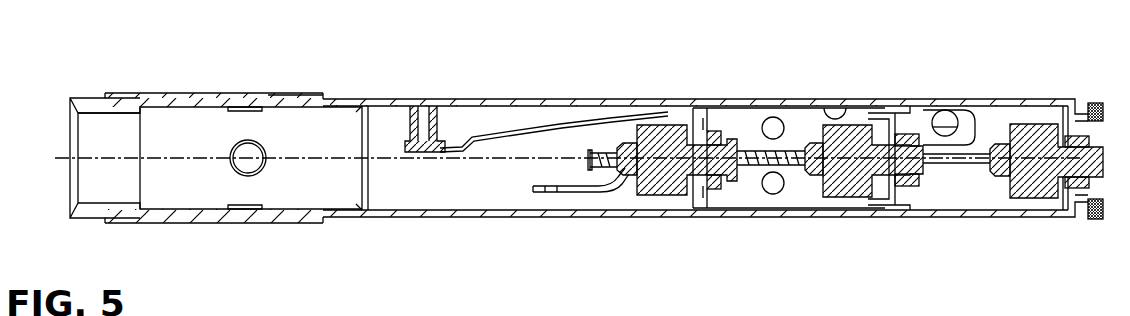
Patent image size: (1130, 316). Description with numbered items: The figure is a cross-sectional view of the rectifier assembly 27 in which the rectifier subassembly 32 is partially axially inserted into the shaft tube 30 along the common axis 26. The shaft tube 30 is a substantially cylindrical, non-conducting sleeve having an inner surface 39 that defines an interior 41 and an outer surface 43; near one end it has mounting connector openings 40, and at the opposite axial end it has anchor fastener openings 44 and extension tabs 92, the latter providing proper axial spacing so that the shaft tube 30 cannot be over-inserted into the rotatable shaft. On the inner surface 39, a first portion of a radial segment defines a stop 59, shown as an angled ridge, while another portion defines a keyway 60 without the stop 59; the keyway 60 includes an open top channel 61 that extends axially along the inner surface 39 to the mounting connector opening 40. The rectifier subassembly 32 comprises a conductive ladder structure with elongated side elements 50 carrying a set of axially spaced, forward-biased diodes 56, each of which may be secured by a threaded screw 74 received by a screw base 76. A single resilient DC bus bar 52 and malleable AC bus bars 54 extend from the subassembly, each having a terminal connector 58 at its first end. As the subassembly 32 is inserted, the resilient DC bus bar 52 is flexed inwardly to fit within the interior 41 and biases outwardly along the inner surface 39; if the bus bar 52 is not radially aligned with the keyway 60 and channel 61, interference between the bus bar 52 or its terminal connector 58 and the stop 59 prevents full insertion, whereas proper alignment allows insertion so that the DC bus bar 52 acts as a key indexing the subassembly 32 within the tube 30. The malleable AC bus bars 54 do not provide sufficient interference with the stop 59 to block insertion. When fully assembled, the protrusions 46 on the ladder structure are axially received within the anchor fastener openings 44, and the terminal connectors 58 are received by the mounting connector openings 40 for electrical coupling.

The common axis 26 is at (62, 162).
The rectifier assembly 27 is at (598, 62).
The shaft tube 30 is at (620, 97).
The rectifier subassembly 32 is at (976, 101).
The inner surface 39 is at (100, 116).
The mounting connector openings 40 is at (226, 208).
The interior 41 is at (174, 143).
The outer surface 43 is at (113, 90).
The anchor fastener openings 44 is at (916, 96).
The protrusions 46 is at (1091, 102).
The side elements 50 is at (735, 108).
The DC bus bar 52 is at (502, 127).
The AC bus bars 54 is at (600, 166).
The diodes 56 is at (665, 124).
The terminal connectors 58 is at (437, 110).
The stop 59 is at (366, 186).
The keyway 60 is at (358, 98).
The open top channel 61 is at (280, 92).
The threaded screw 74 is at (630, 176).
The screw base 76 is at (905, 188).
The extension tabs 92 is at (970, 126).